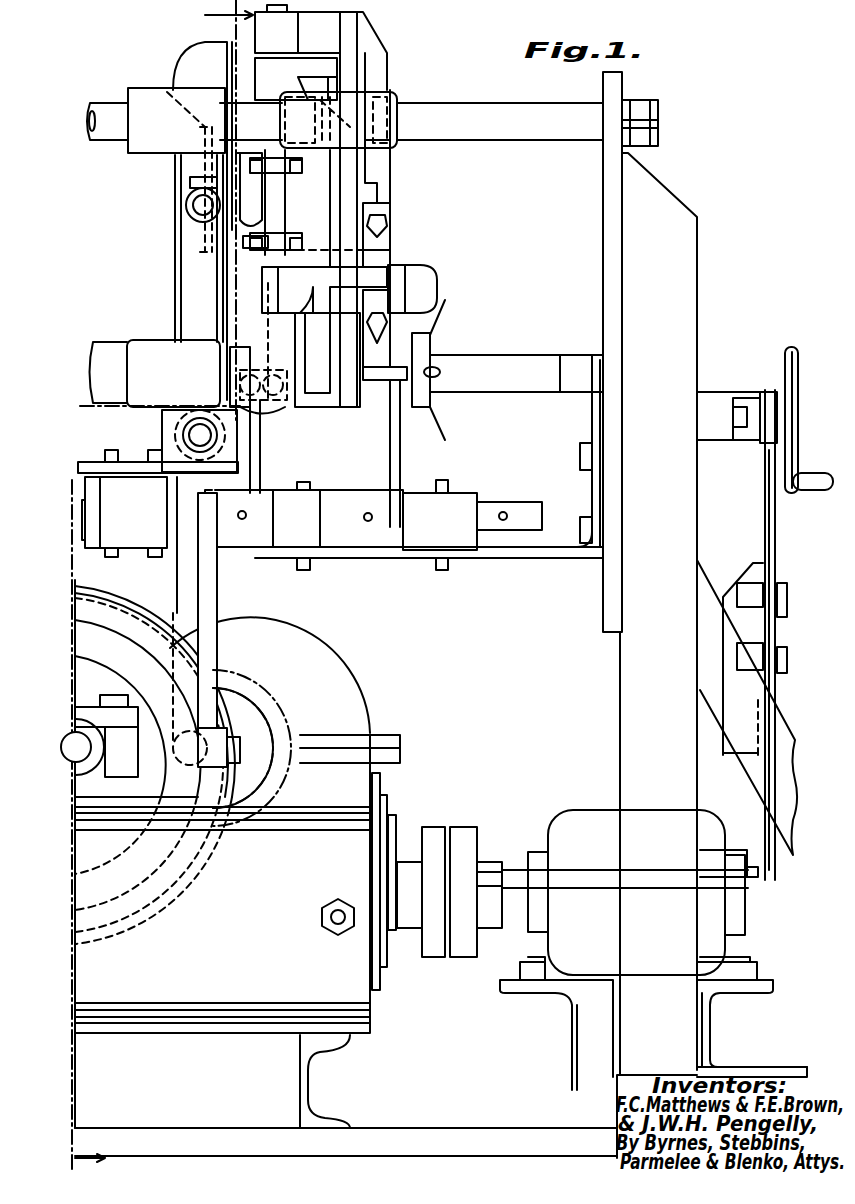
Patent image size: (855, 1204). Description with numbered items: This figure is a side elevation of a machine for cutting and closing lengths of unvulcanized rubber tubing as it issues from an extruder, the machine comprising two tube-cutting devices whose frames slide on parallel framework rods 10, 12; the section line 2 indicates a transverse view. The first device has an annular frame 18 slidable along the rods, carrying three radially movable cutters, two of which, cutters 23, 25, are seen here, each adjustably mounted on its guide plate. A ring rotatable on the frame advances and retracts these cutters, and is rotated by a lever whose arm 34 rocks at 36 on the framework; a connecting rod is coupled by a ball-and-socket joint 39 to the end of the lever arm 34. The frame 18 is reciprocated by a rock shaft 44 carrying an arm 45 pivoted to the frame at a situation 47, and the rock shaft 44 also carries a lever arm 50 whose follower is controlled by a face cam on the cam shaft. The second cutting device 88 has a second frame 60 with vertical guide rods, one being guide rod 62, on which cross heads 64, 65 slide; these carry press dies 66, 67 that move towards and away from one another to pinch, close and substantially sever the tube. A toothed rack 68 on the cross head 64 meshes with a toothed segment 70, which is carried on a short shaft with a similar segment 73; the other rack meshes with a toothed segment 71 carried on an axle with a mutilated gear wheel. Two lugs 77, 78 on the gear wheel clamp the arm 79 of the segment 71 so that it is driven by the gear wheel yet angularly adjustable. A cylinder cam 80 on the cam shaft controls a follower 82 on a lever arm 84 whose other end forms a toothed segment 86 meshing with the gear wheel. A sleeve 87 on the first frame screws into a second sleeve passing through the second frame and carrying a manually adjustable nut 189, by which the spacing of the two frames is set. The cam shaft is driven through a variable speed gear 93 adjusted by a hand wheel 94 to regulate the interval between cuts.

The section line 2- 2 is at (150, 589).
The rod 10 is at (514, 128).
The rod 12 is at (526, 375).
The annular frame 18 is at (205, 65).
The cutter 23 is at (178, 118).
The cutter 25 is at (200, 252).
The lever arm 34 is at (258, 473).
The rocking pivot 36 is at (250, 548).
The ball-and-socket joint 39 is at (303, 416).
The rock shaft 44 is at (205, 435).
The arm 45 is at (195, 300).
The pivot situation 47 is at (186, 205).
The lever arm 50 is at (190, 575).
The second frame 60 is at (345, 55).
The vertical guide rod 62 is at (283, 212).
The cross head 64 is at (282, 165).
The cross head 65 is at (290, 262).
The press die 66 is at (250, 165).
The press die 67 is at (248, 240).
The toothed rack 68 is at (318, 80).
The toothed segment 70 is at (395, 95).
The toothed segment 71 is at (320, 345).
The toothed segment 73 is at (390, 168).
The lug 77 is at (388, 245).
The lug 78 is at (420, 298).
The arm 79 is at (393, 265).
The cylinder cam 80 is at (143, 670).
The follower 82 is at (228, 755).
The lever arm 84 is at (207, 630).
The toothed segment 86 is at (385, 392).
The sleeve 87 is at (230, 350).
The second cutting device 88 is at (370, 25).
The variable speed gear 93 is at (592, 815).
The hand wheel 94 is at (790, 367).
The manually adjustable nut 189 is at (432, 345).